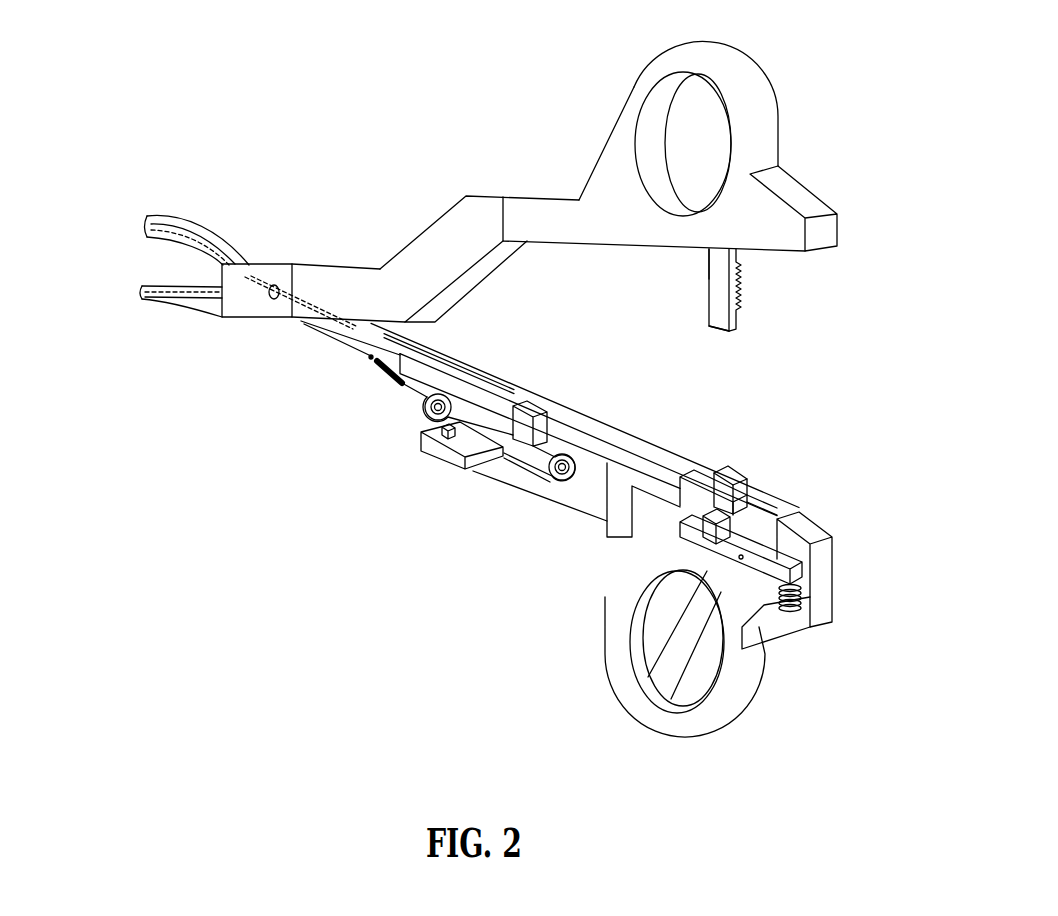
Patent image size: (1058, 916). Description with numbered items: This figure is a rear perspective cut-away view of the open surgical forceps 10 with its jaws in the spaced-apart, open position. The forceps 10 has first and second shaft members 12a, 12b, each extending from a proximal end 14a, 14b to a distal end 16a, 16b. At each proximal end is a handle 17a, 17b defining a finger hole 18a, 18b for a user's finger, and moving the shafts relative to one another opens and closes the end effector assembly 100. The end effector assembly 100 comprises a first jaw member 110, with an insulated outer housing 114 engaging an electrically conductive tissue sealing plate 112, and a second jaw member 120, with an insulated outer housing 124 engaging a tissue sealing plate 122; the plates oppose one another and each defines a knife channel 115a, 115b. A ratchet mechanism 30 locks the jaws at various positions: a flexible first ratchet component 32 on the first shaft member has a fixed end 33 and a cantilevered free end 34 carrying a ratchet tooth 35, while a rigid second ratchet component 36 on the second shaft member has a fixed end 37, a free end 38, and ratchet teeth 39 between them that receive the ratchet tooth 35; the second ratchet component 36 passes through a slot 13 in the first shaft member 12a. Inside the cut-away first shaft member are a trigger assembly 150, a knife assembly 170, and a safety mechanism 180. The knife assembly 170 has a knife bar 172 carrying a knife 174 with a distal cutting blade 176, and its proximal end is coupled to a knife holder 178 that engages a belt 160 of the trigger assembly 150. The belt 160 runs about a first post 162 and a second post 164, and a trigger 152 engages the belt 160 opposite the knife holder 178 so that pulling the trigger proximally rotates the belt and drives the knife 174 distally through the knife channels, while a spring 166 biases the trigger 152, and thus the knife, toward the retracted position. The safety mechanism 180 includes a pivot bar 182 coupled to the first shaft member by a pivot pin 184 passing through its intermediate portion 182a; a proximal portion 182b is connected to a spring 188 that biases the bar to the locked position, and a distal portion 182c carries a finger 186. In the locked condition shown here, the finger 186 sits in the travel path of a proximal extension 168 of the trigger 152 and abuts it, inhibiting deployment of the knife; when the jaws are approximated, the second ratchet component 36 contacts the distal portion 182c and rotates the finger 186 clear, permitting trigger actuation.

The open surgical forceps 10 is at (427, 121).
The first shaft member 12a is at (622, 440).
The second shaft member 12b is at (437, 236).
The slot 13 is at (767, 537).
The proximal end of first shaft member 14a is at (823, 628).
The proximal end of second shaft member 14b is at (595, 183).
The distal end of first shaft member 16a is at (298, 325).
The distal end of second shaft member 16b is at (367, 282).
The handle 17a is at (680, 730).
The handle 17b is at (723, 52).
The finger hole 18a is at (700, 612).
The finger hole 18b is at (711, 125).
The ratchet mechanism 30 is at (762, 318).
The first ratchet component 32 is at (748, 478).
The fixed end 33 is at (762, 515).
The free end 34 is at (746, 478).
The ratchet tooth 35 is at (720, 470).
The second ratchet component 36 is at (715, 295).
The fixed end 37 is at (715, 257).
The free end 38 is at (722, 323).
The ratchet teeth 39 is at (748, 287).
The end effector assembly 100 is at (297, 243).
The first jaw member 110 is at (163, 208).
The tissue sealing plate 112 is at (150, 231).
The insulated outer housing 114 is at (268, 258).
The knife channel 115a is at (183, 244).
The knife channel 115b is at (187, 292).
The second jaw member 120 is at (176, 330).
The tissue sealing plate 122 is at (182, 304).
The insulated outer housing 124 is at (218, 306).
The trigger assembly 150 is at (432, 476).
The trigger 152 is at (430, 450).
The belt 160 is at (497, 461).
The first post 162 is at (428, 412).
The second post 164 is at (538, 482).
The spring 166 is at (385, 377).
The proximal extension 168 is at (617, 525).
The knife assembly 170 is at (437, 351).
The knife bar 172 is at (490, 382).
The knife 174 is at (370, 337).
The distal cutting blade 176 is at (243, 282).
The knife holder 178 is at (533, 400).
The safety mechanism 180 is at (783, 503).
The pivot bar 182 is at (762, 550).
The intermediate portion 182a is at (685, 625).
The proximal portion 182b is at (797, 614).
The distal portion 182c is at (752, 565).
The pivot pin 184 is at (660, 626).
The finger 186 is at (714, 547).
The spring 188 is at (680, 688).